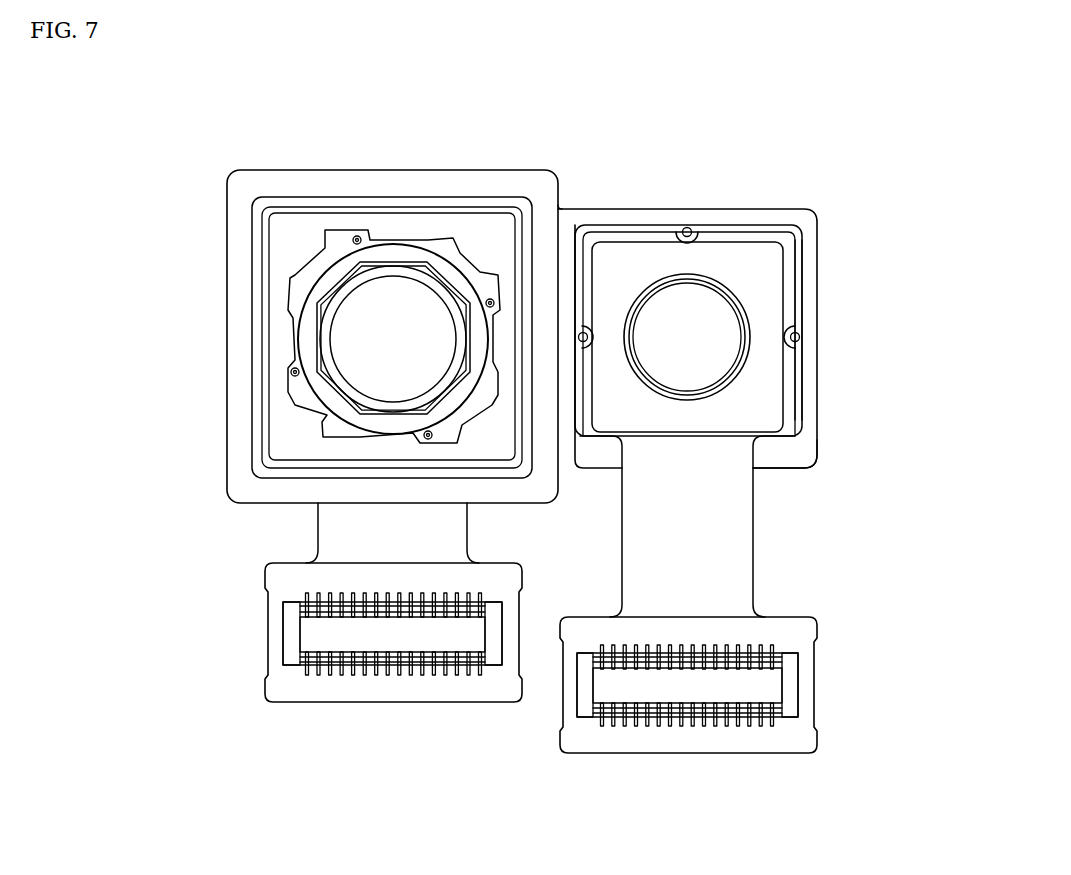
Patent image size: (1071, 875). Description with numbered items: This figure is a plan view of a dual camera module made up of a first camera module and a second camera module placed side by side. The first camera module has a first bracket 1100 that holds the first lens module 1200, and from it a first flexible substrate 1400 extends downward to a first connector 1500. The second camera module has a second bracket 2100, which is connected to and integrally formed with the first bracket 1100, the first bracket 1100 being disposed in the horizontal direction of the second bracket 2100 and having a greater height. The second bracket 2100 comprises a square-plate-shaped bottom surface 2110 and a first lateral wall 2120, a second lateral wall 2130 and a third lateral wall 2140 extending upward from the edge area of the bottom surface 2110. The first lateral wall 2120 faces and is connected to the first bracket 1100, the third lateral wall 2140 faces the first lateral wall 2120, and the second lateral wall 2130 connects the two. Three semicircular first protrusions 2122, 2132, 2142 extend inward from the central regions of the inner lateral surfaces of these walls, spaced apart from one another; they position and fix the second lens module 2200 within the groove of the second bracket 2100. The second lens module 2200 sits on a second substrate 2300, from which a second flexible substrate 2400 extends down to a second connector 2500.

The first bracket 1100 is at (343, 182).
The first lens module 1200 is at (283, 257).
The first flexible substrate 1400 is at (323, 539).
The first connector 1500 is at (277, 647).
The second bracket 2100 is at (805, 212).
The bottom surface 2110 is at (783, 450).
The first lateral wall 2120 is at (565, 292).
The first protrusion 2122 is at (579, 352).
The second lateral wall 2130 is at (652, 217).
The first protrusion 2132 is at (687, 223).
The third lateral wall 2140 is at (810, 285).
The first protrusion 2142 is at (800, 337).
The second lens module 2200 is at (767, 383).
The second substrate 2300 is at (597, 230).
The second flexible substrate 2400 is at (733, 542).
The second connector 2500 is at (803, 700).